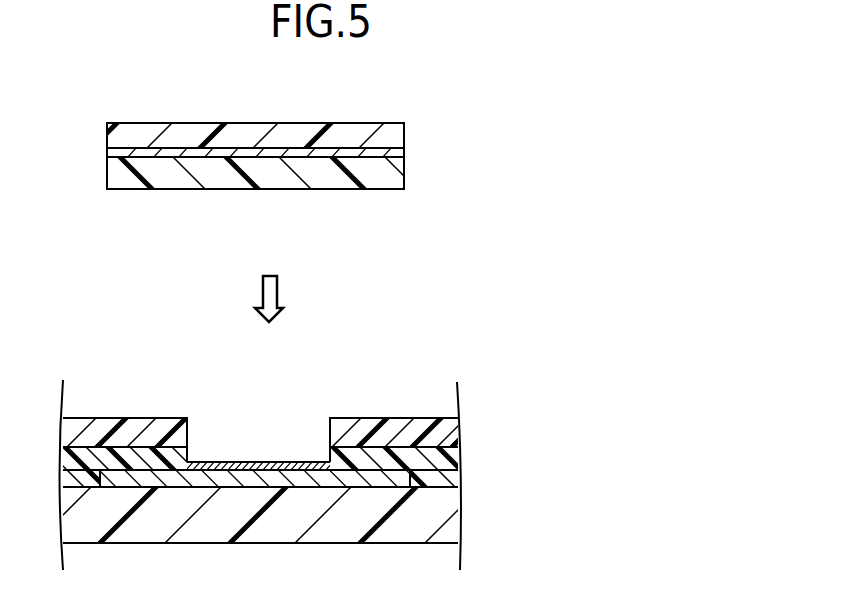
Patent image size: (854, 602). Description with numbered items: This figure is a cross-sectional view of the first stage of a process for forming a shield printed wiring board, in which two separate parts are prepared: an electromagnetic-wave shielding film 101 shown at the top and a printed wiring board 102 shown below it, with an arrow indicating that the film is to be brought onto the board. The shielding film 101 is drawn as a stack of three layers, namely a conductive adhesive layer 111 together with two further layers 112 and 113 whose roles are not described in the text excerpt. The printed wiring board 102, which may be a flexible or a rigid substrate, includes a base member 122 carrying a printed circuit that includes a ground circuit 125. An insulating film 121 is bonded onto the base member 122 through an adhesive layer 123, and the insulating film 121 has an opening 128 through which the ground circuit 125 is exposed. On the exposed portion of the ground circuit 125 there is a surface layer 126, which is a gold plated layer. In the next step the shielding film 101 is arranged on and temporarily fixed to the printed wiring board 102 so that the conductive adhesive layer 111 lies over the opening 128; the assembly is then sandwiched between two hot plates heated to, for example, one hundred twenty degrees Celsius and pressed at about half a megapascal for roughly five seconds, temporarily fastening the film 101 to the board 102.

The electromagnetic-wave shielding film 101 is at (327, 170).
The conductive adhesive layer 111 is at (282, 190).
The upper layer 112 is at (405, 128).
The intermediate layer 113 is at (405, 153).
The printed wiring board 102 is at (335, 466).
The insulating film 121 is at (455, 425).
The base member 122 is at (450, 527).
The adhesive layer 123 is at (457, 462).
The ground circuit 125 is at (460, 482).
The surface layer 126 is at (448, 469).
The opening 128 is at (262, 435).